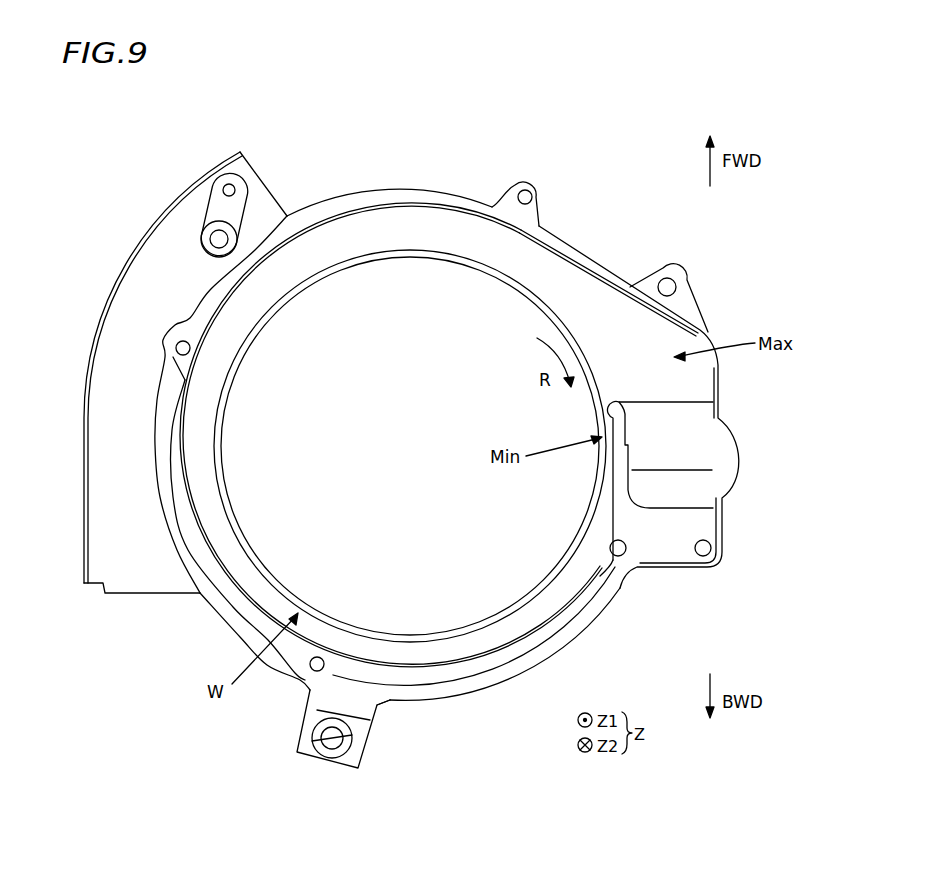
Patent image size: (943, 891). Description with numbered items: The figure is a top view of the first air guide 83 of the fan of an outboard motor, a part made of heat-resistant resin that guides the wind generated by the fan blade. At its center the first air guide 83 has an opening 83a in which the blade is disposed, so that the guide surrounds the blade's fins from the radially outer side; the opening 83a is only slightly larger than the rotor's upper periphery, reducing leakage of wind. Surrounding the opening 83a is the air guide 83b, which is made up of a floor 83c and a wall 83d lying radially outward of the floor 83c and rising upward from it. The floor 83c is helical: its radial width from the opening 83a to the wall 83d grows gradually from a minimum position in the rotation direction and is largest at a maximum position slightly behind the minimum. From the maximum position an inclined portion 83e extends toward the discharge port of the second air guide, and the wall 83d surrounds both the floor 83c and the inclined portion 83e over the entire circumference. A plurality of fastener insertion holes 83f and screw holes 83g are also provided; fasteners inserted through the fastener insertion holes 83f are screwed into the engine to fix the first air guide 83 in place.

The first air guide 83 is at (716, 228).
The opening 83a is at (512, 297).
The air guide 83b is at (439, 487).
The floor 83c is at (452, 650).
The wall 83d is at (493, 647).
The inclined portion 83e is at (680, 432).
The fastener insertion holes 83f is at (214, 238).
The screw holes 83g is at (527, 190).